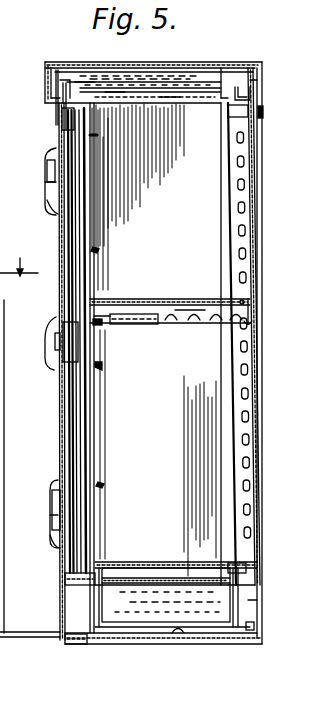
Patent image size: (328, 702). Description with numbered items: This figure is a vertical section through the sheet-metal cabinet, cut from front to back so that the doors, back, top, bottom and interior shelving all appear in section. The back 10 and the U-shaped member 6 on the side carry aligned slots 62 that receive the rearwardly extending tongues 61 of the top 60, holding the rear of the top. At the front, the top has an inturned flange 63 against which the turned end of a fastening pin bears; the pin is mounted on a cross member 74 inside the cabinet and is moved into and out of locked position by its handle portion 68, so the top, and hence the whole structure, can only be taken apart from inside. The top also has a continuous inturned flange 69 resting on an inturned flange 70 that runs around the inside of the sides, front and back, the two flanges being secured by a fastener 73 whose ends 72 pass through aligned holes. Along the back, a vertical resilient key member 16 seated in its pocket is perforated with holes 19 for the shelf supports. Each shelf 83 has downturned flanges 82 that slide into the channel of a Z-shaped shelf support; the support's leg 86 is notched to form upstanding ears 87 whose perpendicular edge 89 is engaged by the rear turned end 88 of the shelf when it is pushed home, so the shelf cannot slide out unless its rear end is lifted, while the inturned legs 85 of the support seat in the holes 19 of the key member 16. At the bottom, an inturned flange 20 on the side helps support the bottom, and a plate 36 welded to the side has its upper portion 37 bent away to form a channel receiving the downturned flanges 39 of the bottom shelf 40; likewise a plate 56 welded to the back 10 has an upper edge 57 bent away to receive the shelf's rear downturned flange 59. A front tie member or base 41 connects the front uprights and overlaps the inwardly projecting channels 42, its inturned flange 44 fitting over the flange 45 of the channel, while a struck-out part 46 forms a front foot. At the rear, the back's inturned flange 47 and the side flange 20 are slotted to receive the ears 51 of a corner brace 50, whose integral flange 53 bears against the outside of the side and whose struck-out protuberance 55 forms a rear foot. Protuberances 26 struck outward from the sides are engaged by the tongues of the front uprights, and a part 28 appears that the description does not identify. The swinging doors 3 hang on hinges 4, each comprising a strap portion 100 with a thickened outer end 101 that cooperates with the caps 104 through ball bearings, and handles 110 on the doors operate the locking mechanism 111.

The swinging doors 3 is at (59, 428).
The hinges 4 is at (46, 158).
The U-shaped member 6 is at (1, 225).
The back 10 is at (262, 252).
The vertical resilient key member 16 is at (241, 171).
The holes or apertures 19 is at (244, 207).
The inturned flange 20 is at (143, 645).
The protuberances 26 is at (99, 249).
The gasket 28 is at (97, 135).
The plate 36 is at (160, 568).
The upper portion 37 is at (140, 568).
The downturned legs or flanges 39 is at (230, 563).
The bottom shelf 40 is at (157, 600).
The front tie member or base 41 is at (66, 605).
The inwardly projecting channels 42 is at (72, 614).
The inturned flange 44 is at (66, 646).
The flange 45 is at (100, 624).
The struck-out part 46 is at (78, 648).
The inturned flange 47 is at (262, 641).
The corner brace 50 is at (218, 645).
The ears 51 is at (254, 628).
The integral flange 53 is at (62, 633).
The protuberance 55 is at (248, 645).
The plate 56 is at (258, 601).
The upper edge 57 is at (235, 590).
The downturned flange 59 is at (256, 570).
The top 60 is at (178, 63).
The rearwardly extending tongues 61 is at (238, 110).
The alined slots 62 is at (264, 113).
The inturned flange 63 is at (60, 112).
The handle portion 68 is at (78, 82).
The continuous inturned flange 69 is at (242, 87).
The inturned flange 70 is at (253, 84).
The ends 72 is at (108, 92).
The fastener 73 is at (190, 127).
The cross member 74 is at (55, 92).
The downturned legs or flanges 82 is at (100, 299).
The shelves 83 is at (165, 299).
The inturned ends or legs 85 is at (4, 308).
The leg 86 is at (140, 325).
The upstanding ears 87 is at (190, 310).
The rear turned end 88 is at (252, 321).
The perpendicular edge 89 is at (190, 325).
The strap portion 100 is at (47, 180).
The thickened or enlarged outer end 101 is at (52, 504).
The caps 104 is at (50, 205).
The handles 110 is at (50, 330).
The locking mechanism 111 is at (78, 362).